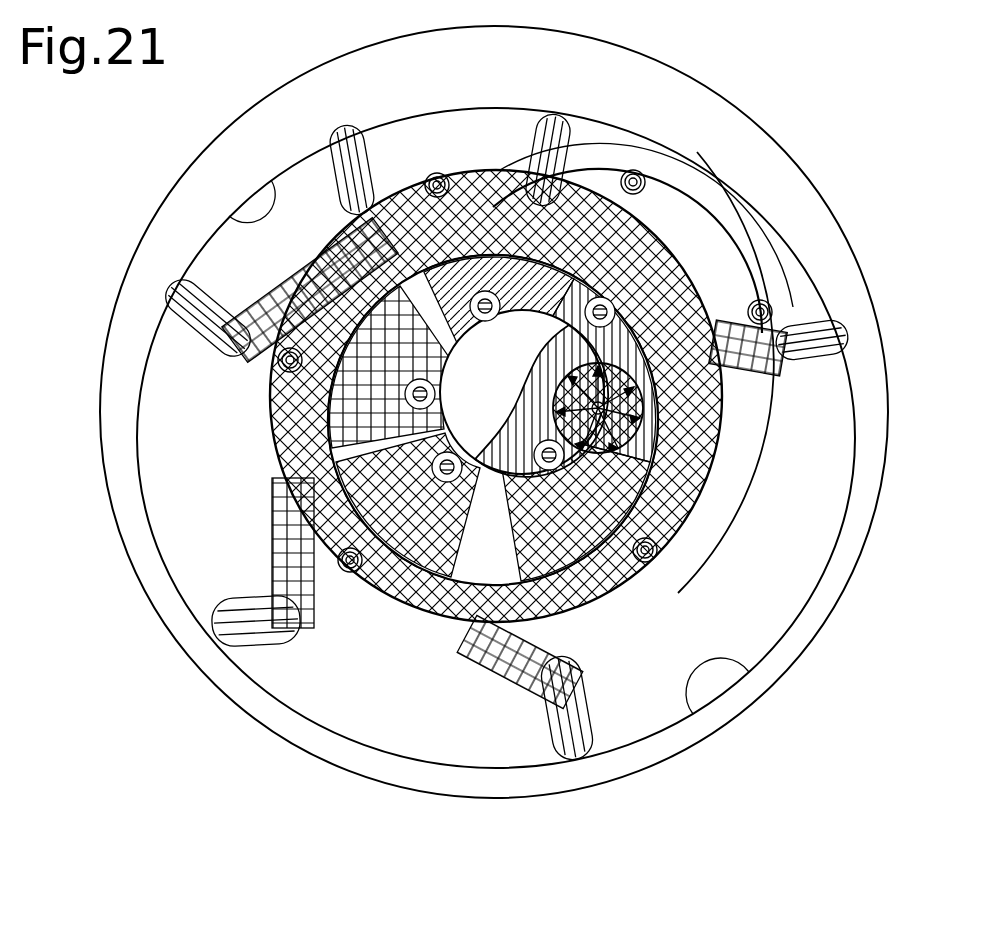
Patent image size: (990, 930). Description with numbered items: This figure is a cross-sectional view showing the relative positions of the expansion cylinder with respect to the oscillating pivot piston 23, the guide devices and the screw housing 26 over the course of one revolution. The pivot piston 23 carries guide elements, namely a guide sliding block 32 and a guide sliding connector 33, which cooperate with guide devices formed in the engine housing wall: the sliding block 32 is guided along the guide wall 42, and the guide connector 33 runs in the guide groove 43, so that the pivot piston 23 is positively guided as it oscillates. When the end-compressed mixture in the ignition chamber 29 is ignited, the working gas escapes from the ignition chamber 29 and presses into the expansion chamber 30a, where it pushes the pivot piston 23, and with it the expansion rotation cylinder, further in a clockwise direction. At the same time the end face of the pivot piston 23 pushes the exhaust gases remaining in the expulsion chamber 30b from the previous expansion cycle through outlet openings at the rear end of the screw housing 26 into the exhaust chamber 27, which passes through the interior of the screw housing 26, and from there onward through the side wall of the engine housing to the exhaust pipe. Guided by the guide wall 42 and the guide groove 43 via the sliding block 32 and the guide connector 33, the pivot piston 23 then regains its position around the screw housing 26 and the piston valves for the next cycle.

The oscillating pivot piston 23 is at (423, 197).
The screw housing 26 is at (665, 305).
The exhaust chamber 27 is at (325, 468).
The ignition chamber 29 is at (604, 407).
The expansion chamber 30a is at (572, 598).
The expulsion chamber 30b is at (337, 240).
The guide sliding block 32 is at (347, 133).
The guide sliding connector 33 is at (437, 173).
The guide wall 42 is at (217, 217).
The guide groove 43 is at (720, 237).